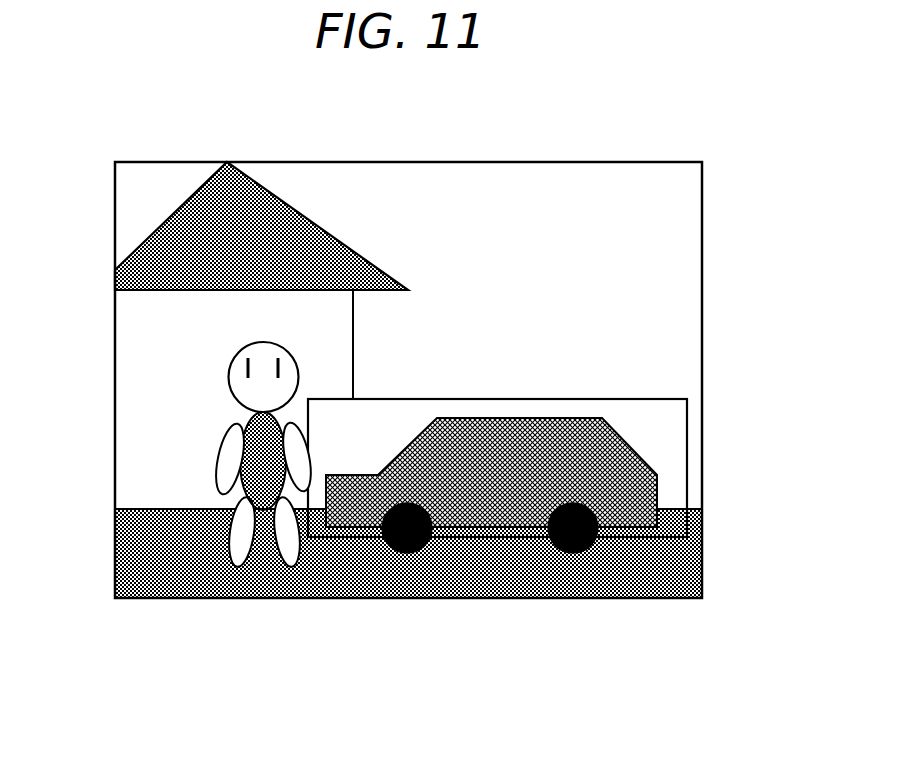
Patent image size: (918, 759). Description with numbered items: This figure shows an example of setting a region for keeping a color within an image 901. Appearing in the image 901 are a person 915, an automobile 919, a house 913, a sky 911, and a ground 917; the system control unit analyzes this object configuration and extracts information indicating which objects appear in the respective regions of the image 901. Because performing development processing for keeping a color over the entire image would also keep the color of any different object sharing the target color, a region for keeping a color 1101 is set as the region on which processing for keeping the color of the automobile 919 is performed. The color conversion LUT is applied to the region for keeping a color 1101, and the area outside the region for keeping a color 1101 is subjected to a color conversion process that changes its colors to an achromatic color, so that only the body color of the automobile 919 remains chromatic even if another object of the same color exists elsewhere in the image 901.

The image 901 is at (115, 153).
The sky 911 is at (522, 172).
The house 913 is at (130, 338).
The person 915 is at (226, 454).
The ground 917 is at (130, 548).
The automobile 919 is at (502, 517).
The region for keeping a color 1101 is at (680, 440).